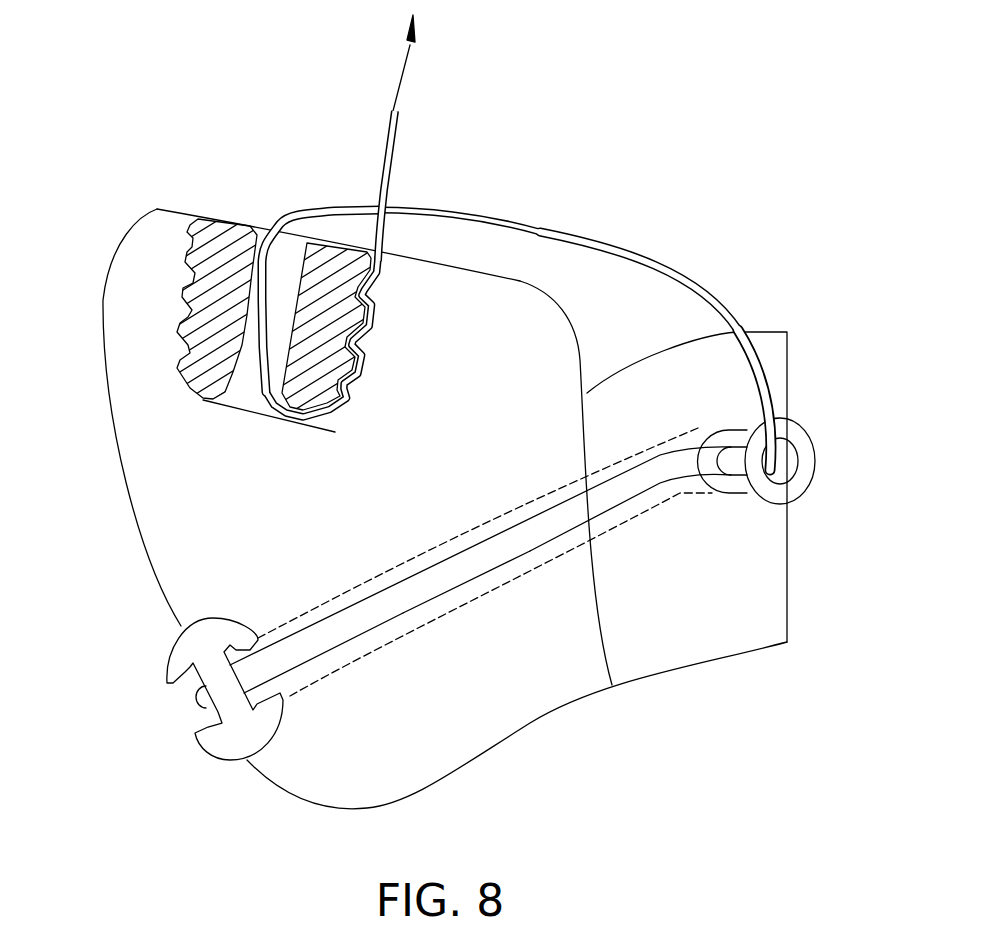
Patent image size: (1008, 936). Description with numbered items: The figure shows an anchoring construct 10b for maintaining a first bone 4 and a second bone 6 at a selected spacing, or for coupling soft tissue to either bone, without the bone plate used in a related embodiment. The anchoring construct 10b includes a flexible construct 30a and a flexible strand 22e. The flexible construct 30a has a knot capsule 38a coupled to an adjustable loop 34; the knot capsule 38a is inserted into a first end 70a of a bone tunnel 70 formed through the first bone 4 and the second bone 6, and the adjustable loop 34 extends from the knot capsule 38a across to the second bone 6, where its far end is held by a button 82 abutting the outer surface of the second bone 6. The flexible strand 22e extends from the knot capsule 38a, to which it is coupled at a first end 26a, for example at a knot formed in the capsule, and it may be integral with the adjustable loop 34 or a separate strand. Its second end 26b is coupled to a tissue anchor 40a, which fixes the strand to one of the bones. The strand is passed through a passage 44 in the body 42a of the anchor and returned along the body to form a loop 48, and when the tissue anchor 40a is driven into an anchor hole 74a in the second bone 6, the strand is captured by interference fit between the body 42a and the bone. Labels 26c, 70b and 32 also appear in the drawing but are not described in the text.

The anchoring construct 10b is at (706, 162).
The second bone 6 is at (128, 331).
The first bone 4 is at (773, 600).
The loop 48 is at (303, 418).
The anchor hole 74a is at (155, 291).
The tissue anchor 40a is at (217, 230).
The body 42a is at (285, 388).
The passage 44 is at (269, 216).
The flexible strand 22e is at (530, 222).
The arcuate strap portion 26c is at (640, 263).
The first end 26a is at (763, 387).
The second end 26b is at (397, 130).
The bone tunnel 70 is at (698, 428).
The first end 70a is at (734, 519).
The second strap end 70b is at (306, 720).
The flexible construct 30a is at (641, 557).
The strap edge 32 is at (530, 551).
The adjustable loop 34 is at (407, 613).
The knot capsule 38a is at (805, 473).
The button 82 is at (210, 742).